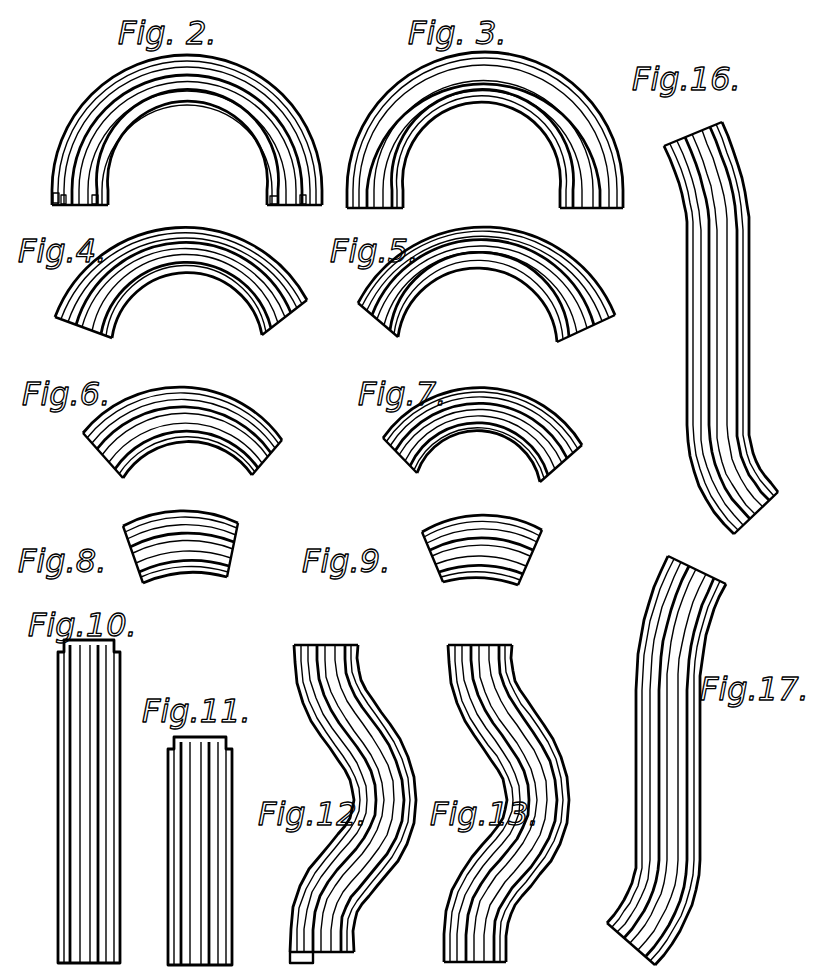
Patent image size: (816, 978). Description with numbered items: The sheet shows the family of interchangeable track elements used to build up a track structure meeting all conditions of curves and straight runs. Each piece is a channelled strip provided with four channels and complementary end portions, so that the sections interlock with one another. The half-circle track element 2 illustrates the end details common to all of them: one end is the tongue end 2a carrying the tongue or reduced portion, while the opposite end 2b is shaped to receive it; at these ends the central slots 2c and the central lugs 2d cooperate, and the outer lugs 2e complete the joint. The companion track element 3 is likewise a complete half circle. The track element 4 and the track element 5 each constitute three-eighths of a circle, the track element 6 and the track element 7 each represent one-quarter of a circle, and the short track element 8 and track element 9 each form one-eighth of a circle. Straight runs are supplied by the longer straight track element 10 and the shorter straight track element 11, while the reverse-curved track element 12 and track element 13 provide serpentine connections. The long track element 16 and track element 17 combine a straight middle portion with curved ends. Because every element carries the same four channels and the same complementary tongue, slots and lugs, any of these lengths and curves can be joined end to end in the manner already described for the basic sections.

In FIG. 2, the track element 2 is at (192, 110).
In FIG. 2, the tongue end 2a is at (272, 208).
In FIG. 2, the opposite end 2b is at (97, 208).
In FIG. 2, the central slots 2c is at (62, 205).
In FIG. 2, the central lugs 2d is at (304, 207).
In FIG. 2, the outer lugs 2e is at (52, 195).
In FIG. 3, the track element 3 is at (520, 117).
In FIG. 4, the track element 4 is at (190, 268).
In FIG. 5, the track element 5 is at (488, 268).
In FIG. 6, the track element 6 is at (190, 430).
In FIG. 7, the track element 7 is at (488, 437).
In FIG. 8, the track element 8 is at (187, 565).
In FIG. 9, the track element 9 is at (483, 563).
In FIG. 10, the track element 10 is at (98, 752).
In FIG. 11, the track element 11 is at (220, 860).
In FIG. 12, the track element 12 is at (383, 867).
In FIG. 13, the track element 13 is at (557, 808).
In FIG. 16, the track element 16 is at (744, 204).
In FIG. 17, the track element 17 is at (684, 757).